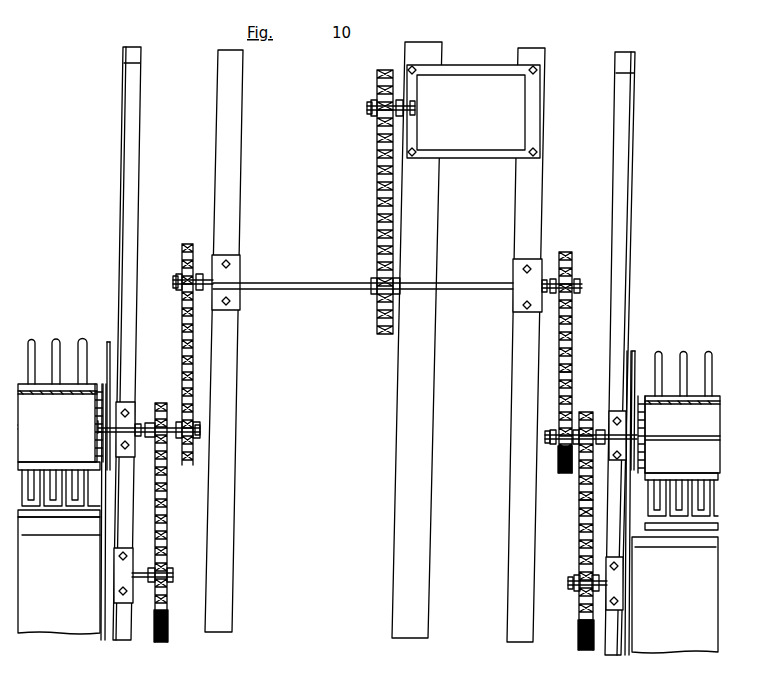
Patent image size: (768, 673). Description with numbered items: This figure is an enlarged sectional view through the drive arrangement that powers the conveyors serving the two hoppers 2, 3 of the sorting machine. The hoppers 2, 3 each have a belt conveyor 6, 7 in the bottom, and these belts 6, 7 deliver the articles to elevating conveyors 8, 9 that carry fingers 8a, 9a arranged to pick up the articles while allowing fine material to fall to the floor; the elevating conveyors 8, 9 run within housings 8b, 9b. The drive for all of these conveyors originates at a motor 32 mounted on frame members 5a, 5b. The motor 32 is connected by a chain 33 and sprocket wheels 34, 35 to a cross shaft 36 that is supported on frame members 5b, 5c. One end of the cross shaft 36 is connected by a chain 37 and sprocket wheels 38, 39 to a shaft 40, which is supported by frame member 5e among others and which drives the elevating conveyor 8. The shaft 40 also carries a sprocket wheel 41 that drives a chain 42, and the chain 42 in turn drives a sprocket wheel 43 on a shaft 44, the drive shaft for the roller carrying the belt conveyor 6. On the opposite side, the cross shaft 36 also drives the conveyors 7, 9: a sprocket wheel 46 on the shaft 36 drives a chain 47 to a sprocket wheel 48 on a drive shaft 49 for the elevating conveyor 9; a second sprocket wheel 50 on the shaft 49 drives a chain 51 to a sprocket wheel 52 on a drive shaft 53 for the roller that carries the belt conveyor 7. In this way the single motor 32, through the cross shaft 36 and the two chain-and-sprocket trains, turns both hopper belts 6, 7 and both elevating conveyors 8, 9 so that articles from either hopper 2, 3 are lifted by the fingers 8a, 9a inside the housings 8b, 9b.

The hopper 2 is at (101, 632).
The hopper 3 is at (630, 652).
The frame member 5a is at (402, 374).
The frame member 5b is at (517, 361).
The frame member 5c is at (241, 339).
The frame member 5e is at (118, 322).
The belt conveyor 6 is at (59, 548).
The belt conveyor 7 is at (675, 563).
The elevating conveyor 8 is at (38, 386).
The fingers 8a is at (56, 343).
The housing 8b is at (107, 352).
The elevating conveyor 9 is at (660, 396).
The fingers 9a is at (684, 354).
The housing 9b is at (635, 372).
The motor 32 is at (473, 111).
The chain 33 is at (377, 199).
The sprocket wheel 34 is at (374, 106).
The sprocket wheel 35 is at (376, 281).
The cross shaft 36 is at (322, 289).
The chain 37 is at (185, 352).
The sprocket wheel 38 is at (183, 280).
The sprocket wheel 39 is at (194, 454).
The shaft 40 is at (146, 424).
The sprocket wheel 41 is at (164, 404).
The chain 42 is at (168, 506).
The sprocket wheel 43 is at (166, 620).
The shaft 44 is at (144, 573).
The sprocket wheel 46 is at (567, 255).
The chain 47 is at (571, 369).
The sprocket wheel 48 is at (560, 474).
The drive shaft 49 is at (672, 444).
The sprocket wheel 50 is at (586, 413).
The chain 51 is at (579, 502).
The sprocket wheel 52 is at (579, 614).
The drive shaft 53 is at (572, 582).